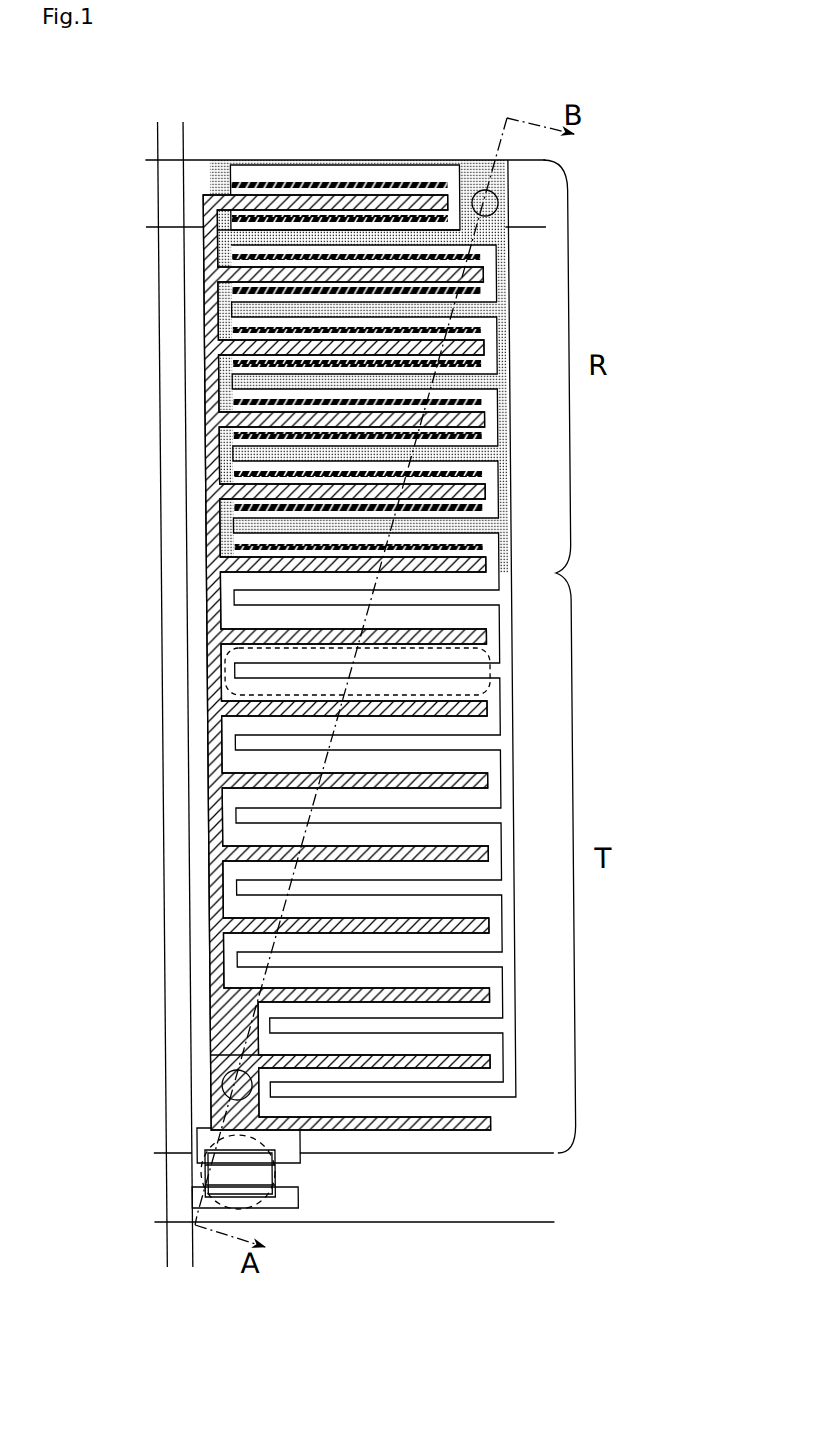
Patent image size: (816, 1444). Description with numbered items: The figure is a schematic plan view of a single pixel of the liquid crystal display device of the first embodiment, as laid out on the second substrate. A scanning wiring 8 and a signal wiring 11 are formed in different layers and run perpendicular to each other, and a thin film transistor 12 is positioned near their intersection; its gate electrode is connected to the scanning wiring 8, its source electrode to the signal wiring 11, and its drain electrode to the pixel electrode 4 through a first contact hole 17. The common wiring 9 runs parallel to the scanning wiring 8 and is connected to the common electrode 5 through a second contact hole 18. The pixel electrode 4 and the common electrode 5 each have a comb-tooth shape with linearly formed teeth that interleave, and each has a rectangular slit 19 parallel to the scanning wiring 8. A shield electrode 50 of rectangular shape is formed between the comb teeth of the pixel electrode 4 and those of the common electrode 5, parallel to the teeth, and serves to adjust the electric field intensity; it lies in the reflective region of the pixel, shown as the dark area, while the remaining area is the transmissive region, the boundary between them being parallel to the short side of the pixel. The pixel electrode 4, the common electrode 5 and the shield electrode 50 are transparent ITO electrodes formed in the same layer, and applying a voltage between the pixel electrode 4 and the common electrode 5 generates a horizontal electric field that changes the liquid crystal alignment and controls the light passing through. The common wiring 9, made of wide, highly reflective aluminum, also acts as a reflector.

The pixel electrode 4 is at (206, 708).
The common electrode 5 is at (505, 798).
The scanning wiring 8 is at (140, 1172).
The common wiring 9 is at (148, 178).
The signal wiring 11 is at (162, 343).
The thin film transistor 12 is at (268, 1173).
The first contact hole 17 is at (213, 1083).
The second contact hole 18 is at (495, 199).
The rectangular slit 19 is at (484, 672).
The shield electrode 50 is at (332, 182).